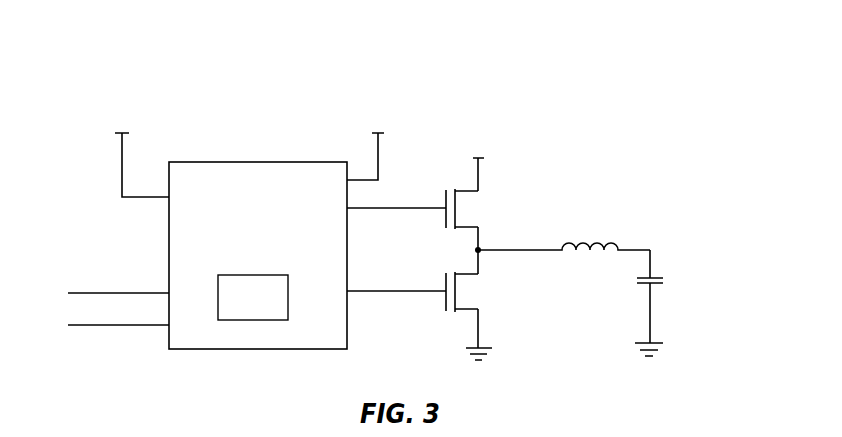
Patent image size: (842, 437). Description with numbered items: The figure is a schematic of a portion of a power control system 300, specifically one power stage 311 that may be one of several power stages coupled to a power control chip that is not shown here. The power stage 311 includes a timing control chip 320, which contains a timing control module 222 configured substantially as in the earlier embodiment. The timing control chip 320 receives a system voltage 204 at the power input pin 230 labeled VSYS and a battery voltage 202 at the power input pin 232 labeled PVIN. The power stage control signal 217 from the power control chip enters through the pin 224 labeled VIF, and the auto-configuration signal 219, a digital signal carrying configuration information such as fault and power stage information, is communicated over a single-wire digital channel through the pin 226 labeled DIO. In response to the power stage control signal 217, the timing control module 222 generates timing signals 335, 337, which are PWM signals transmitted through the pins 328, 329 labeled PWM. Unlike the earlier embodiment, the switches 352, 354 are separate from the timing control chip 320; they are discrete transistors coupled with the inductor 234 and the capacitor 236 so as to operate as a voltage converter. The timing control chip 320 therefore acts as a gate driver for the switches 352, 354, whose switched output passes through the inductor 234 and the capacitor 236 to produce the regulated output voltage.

The power control system 300 is at (430, 50).
The power stage 311 is at (536, 164).
The timing control chip 320 is at (263, 162).
The timing control module 222 is at (269, 309).
The power input pin 230 is at (196, 196).
The power input pin 232 is at (297, 183).
The pin 328 is at (310, 216).
The pin 329 is at (315, 283).
The pin 224 is at (193, 283).
The pin 226 is at (205, 327).
The system voltage 204 is at (122, 161).
The battery voltage 202 is at (378, 160).
The power stage control signal 217 is at (118, 293).
The auto-configuration signal 219 is at (118, 325).
The timing signal 335 is at (395, 208).
The timing signal 337 is at (395, 291).
The switch 352 is at (465, 190).
The switch 354 is at (465, 310).
The inductor 234 is at (585, 242).
The capacitor 236 is at (660, 276).